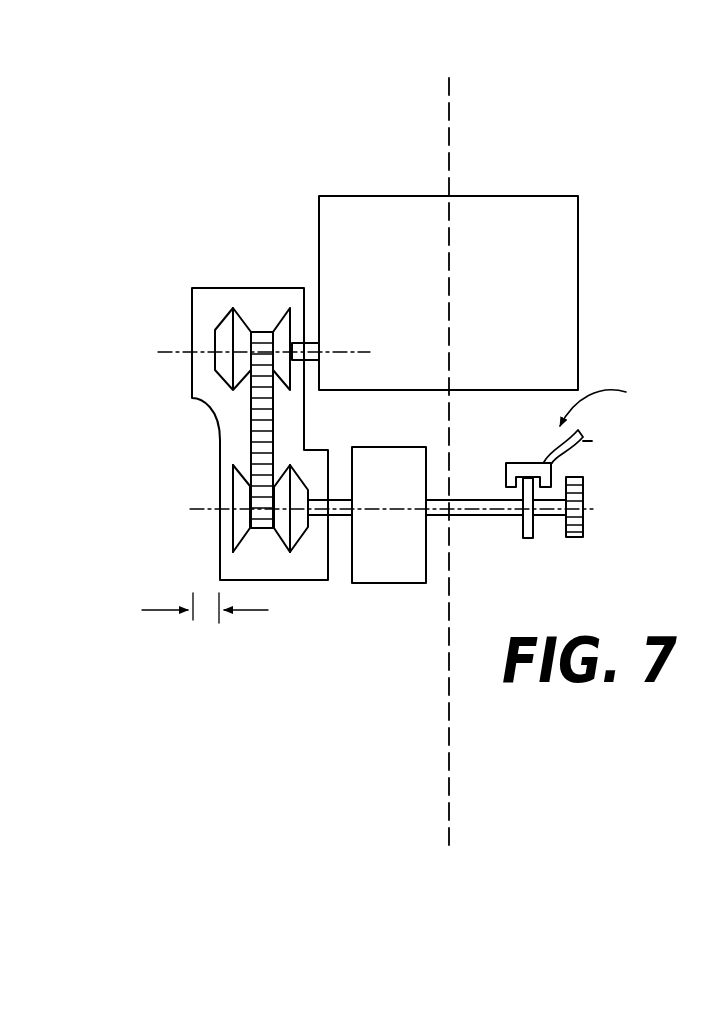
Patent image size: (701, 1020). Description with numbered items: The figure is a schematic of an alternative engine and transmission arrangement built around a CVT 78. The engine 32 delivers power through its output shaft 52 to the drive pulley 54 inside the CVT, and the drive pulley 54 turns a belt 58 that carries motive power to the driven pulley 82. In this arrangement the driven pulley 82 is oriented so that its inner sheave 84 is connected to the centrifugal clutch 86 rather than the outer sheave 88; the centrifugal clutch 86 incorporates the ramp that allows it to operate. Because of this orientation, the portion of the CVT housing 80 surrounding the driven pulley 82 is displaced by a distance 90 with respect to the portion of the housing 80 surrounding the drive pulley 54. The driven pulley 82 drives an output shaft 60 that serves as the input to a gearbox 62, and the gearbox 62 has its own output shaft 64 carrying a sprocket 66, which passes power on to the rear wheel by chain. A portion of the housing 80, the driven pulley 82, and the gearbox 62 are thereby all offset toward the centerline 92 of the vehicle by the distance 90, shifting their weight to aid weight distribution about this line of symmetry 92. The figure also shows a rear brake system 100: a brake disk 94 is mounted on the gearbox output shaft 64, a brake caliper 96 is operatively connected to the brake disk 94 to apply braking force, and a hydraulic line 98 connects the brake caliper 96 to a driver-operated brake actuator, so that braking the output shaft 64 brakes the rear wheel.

The engine 32 is at (527, 271).
The output shaft 52 is at (310, 342).
The drive pulley 54 is at (233, 306).
The belt 58 is at (251, 405).
The output shaft 60 is at (340, 516).
The gearbox 62 is at (383, 584).
The output shaft 64 is at (472, 499).
The sprocket 66 is at (574, 534).
The CVT 78 is at (160, 448).
The CVT housing 80 is at (274, 530).
The driven pulley 82 is at (216, 494).
The inner sheave 84 is at (290, 553).
The centrifugal clutch 86 is at (308, 528).
The outer sheave 88 is at (233, 537).
The distance 90 is at (185, 611).
The centerline 92 is at (449, 770).
The brake disk 94 is at (524, 539).
The brake caliper 96 is at (504, 462).
The hydraulic line 98 is at (575, 446).
The rear brake system 100 is at (620, 402).